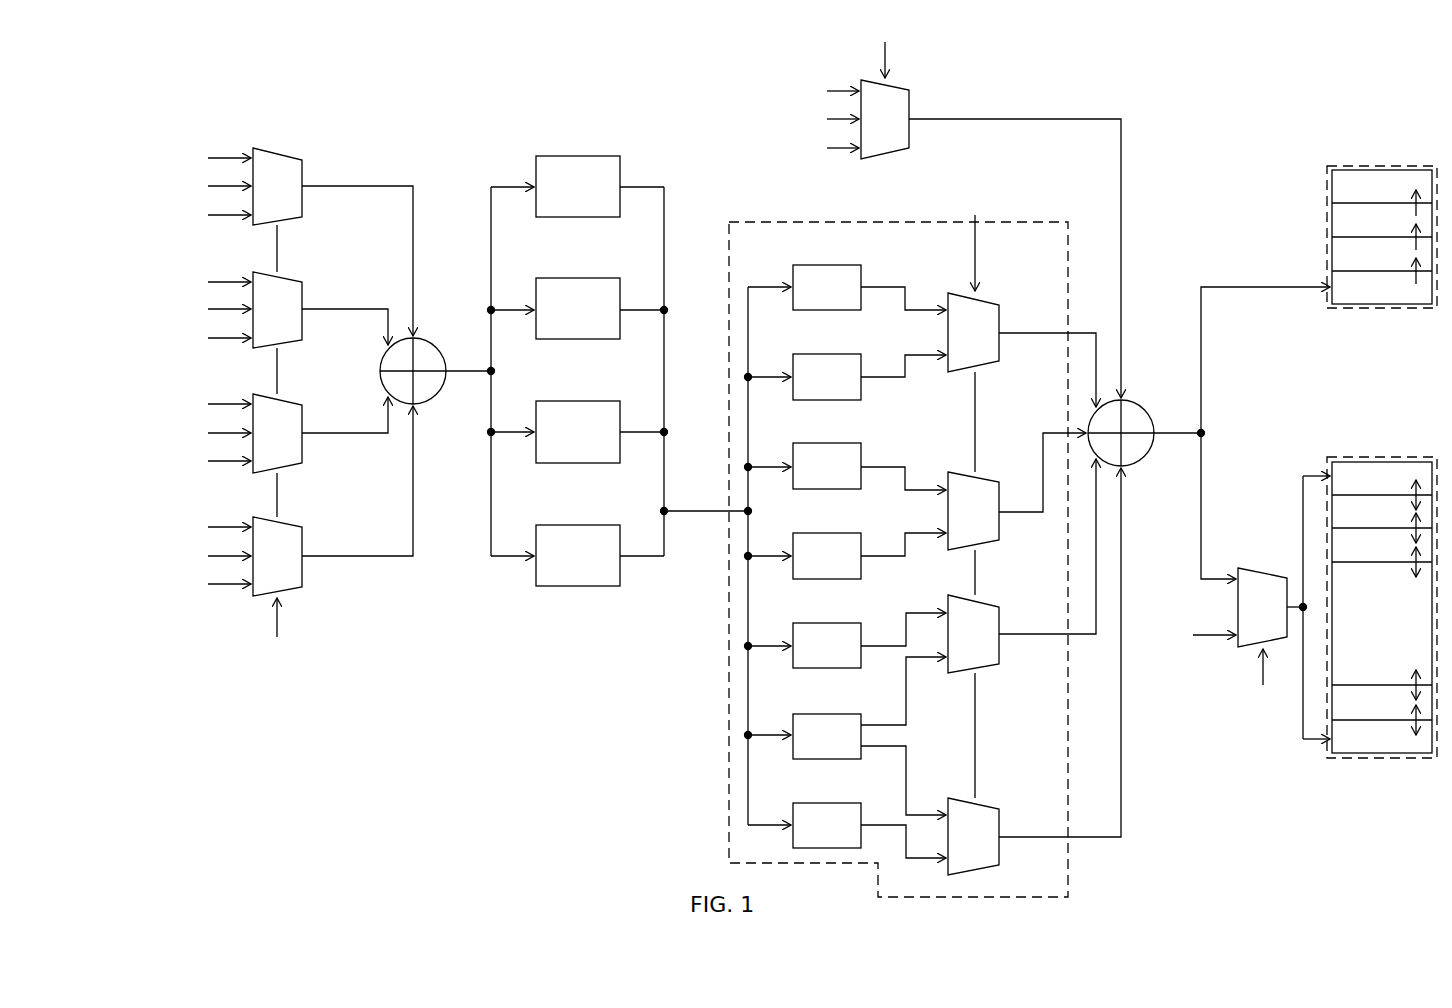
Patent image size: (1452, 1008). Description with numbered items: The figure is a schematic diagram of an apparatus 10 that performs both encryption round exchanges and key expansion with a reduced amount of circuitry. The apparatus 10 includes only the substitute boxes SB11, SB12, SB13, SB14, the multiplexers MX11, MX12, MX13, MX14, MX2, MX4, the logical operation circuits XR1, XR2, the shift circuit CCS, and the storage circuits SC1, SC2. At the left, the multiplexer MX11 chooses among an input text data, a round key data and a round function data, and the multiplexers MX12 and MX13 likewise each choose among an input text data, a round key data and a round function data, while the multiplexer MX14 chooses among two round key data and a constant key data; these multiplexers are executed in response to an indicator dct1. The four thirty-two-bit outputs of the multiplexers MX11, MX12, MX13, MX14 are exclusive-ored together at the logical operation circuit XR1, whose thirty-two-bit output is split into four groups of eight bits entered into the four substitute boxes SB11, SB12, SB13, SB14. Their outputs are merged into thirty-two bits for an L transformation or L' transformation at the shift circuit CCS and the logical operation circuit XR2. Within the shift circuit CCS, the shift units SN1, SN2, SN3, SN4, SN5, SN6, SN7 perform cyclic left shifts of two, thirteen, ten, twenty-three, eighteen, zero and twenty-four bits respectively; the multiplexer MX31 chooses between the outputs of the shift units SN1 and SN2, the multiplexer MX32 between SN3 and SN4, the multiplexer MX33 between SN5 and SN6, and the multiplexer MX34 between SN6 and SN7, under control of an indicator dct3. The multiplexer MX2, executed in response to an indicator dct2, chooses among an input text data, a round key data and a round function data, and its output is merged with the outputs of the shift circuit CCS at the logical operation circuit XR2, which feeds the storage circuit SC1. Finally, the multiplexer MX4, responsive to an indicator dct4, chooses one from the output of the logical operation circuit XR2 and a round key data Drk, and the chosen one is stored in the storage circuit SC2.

The apparatus 10 is at (168, 76).
The multiplexer MX11 is at (322, 131).
The multiplexer MX12 is at (322, 253).
The multiplexer MX13 is at (322, 378).
The multiplexer MX14 is at (322, 501).
The logical operation circuit XR1 is at (432, 344).
The substitute box SB11 is at (576, 154).
The substitute box SB12 is at (576, 276).
The substitute box SB13 is at (576, 399).
The substitute box SB14 is at (576, 523).
The multiplexer MX2 is at (910, 104).
The indicator dct1 is at (277, 631).
The indicator dct2 is at (885, 46).
The indicator dct3 is at (975, 493).
The indicator dct4 is at (1263, 683).
The shift circuit CCS is at (729, 780).
The shift unit SN1 is at (826, 264).
The shift unit SN2 is at (826, 353).
The shift unit SN3 is at (826, 442).
The shift unit SN4 is at (826, 532).
The shift unit SN5 is at (826, 622).
The shift unit SN6 is at (826, 713).
The shift unit SN7 is at (826, 802).
The multiplexer MX31 is at (1000, 352).
The multiplexer MX32 is at (1000, 530).
The multiplexer MX33 is at (1000, 655).
The multiplexer MX34 is at (1012, 780).
The logical operation circuit XR2 is at (1138, 404).
The multiplexer MX4 is at (1259, 569).
The storage circuit SC1 is at (1348, 166).
The storage circuit SC2 is at (1348, 457).
The round key data Drk is at (1192, 634).